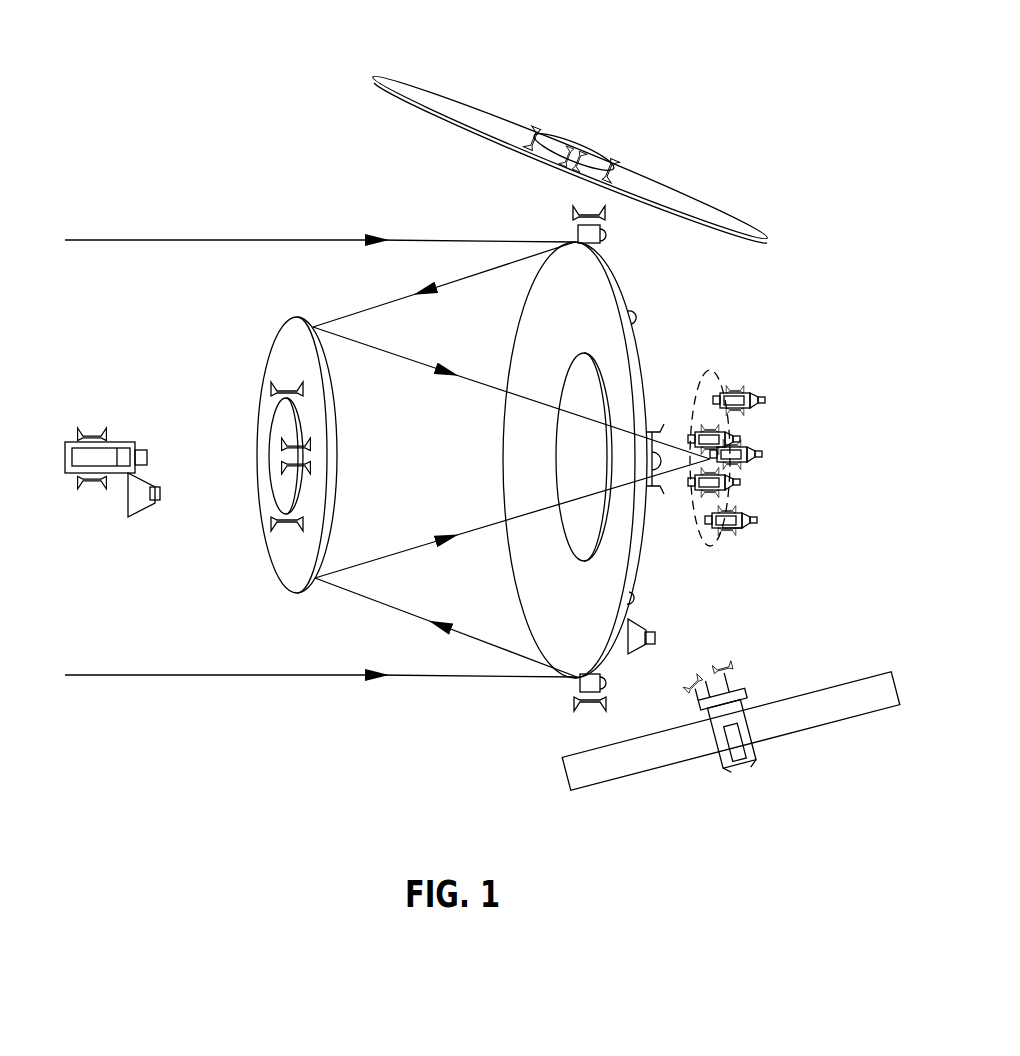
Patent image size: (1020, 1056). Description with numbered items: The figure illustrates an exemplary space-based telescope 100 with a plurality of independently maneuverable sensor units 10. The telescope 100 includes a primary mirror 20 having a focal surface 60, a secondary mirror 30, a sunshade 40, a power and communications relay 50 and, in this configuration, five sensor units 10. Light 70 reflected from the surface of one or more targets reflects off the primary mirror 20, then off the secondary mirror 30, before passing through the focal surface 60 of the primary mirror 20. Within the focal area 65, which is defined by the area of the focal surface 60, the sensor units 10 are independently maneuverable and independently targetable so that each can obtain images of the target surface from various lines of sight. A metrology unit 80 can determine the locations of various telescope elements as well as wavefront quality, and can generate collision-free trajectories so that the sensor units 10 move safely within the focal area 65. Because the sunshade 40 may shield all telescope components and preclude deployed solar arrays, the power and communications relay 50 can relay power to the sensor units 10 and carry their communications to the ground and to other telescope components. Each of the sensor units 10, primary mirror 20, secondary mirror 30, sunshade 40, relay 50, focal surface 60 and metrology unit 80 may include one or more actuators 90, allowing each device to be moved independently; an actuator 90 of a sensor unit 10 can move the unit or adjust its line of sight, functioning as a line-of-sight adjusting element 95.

The sensor units 10 is at (762, 392).
The primary mirror 20 is at (527, 587).
The secondary mirror 30 is at (273, 343).
The sunshade 40 is at (460, 90).
The power and communications relay 50 is at (803, 705).
The focal surface 60 is at (597, 373).
The focal area 65 is at (715, 362).
The light 70 is at (165, 238).
The metrology unit 80 is at (105, 425).
The actuators 90 is at (620, 171).
The line-of-sight adjusting element 95 is at (731, 541).
The space-based telescope 100 is at (765, 87).